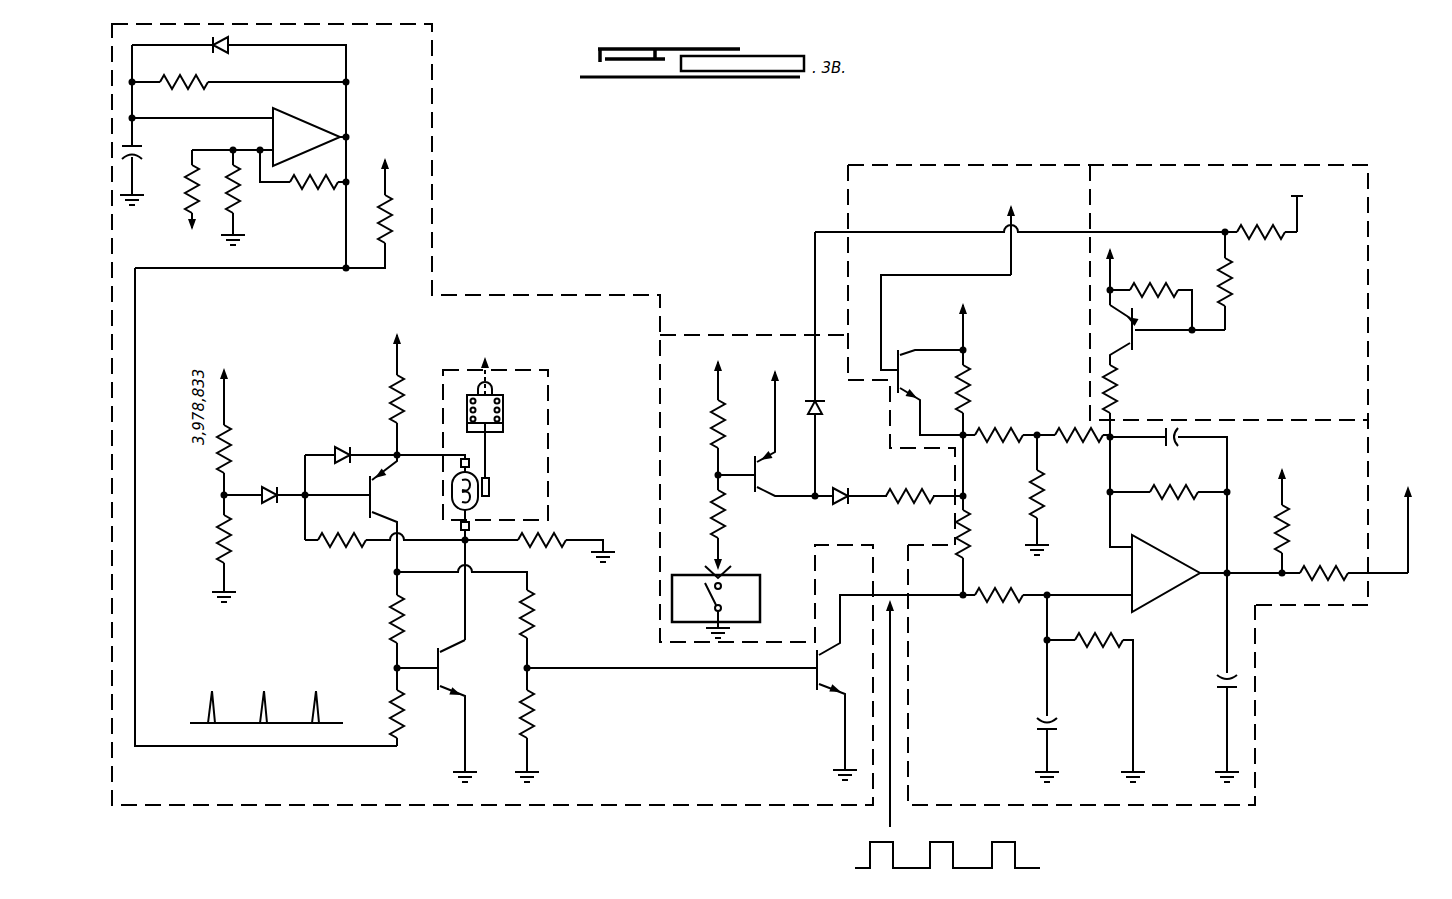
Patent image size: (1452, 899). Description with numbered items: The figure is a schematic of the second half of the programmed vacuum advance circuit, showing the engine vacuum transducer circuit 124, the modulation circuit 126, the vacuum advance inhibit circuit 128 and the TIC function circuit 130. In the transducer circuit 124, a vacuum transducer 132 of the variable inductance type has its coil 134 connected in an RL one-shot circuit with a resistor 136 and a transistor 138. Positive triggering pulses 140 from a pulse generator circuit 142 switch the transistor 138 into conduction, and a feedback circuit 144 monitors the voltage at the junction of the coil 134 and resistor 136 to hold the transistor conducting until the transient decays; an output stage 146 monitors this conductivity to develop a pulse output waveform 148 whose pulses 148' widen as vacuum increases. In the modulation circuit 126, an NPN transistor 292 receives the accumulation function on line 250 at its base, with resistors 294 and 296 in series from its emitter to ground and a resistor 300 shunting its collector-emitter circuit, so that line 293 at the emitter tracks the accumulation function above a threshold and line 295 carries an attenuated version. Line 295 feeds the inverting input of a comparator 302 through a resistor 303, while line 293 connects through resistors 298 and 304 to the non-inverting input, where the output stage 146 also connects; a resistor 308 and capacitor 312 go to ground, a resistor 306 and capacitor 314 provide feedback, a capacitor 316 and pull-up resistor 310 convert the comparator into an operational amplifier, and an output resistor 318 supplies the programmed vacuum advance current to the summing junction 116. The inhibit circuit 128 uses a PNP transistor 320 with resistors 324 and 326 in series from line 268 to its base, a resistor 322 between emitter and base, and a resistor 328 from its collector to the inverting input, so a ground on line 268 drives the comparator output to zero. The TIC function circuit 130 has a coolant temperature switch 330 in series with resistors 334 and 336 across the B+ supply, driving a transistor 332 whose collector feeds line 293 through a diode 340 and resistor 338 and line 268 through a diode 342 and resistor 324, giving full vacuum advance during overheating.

The summing junction 116 is at (1412, 487).
The engine vacuum transducer circuit 124 is at (763, 808).
The modulation circuit 126 is at (1215, 806).
The vacuum advance inhibit circuit 128 is at (1360, 140).
The TIC function circuit 130 is at (752, 335).
The vacuum transducer 132 is at (548, 395).
The coil 134 is at (478, 512).
The resistor 136 is at (392, 395).
The transistor 138 is at (453, 668).
The triggering pulses 140 is at (318, 703).
The pulse generator circuit 142 is at (300, 282).
The feedback circuit 144 is at (302, 440).
The output stage 146 is at (818, 699).
The pulse output waveform 148 is at (921, 734).
The pulse 148' is at (942, 830).
The line 250 is at (1013, 252).
The line 268 is at (1298, 209).
The NPN transistor 292 is at (905, 349).
The line 293 is at (920, 421).
The resistor 294 is at (992, 432).
The line 295 is at (1037, 432).
The resistor 296 is at (1030, 490).
The resistor 298 is at (975, 535).
The resistor 300 is at (983, 372).
The comparator 302 is at (1190, 592).
The resistor 303 is at (1078, 445).
The resistor 304 is at (992, 605).
The resistor 306 is at (1174, 500).
The resistor 308 is at (1090, 650).
The resistor 310 is at (1290, 530).
The capacitor 312 is at (1035, 730).
The capacitor 314 is at (1173, 430).
The capacitor 316 is at (1215, 683).
The output resistor 318 is at (1322, 571).
The PNP transistor 320 is at (1122, 327).
The resistor 322 is at (1158, 288).
The resistor 324 is at (1265, 245).
The resistor 326 is at (1230, 283).
The resistor 328 is at (1115, 395).
The engine coolant temperature responsive switch 330 is at (762, 582).
The transistor 332 is at (765, 476).
The resistor 334 is at (725, 410).
The resistor 336 is at (722, 520).
The resistor 338 is at (918, 492).
The diode 340 is at (843, 505).
The diode 342 is at (828, 408).